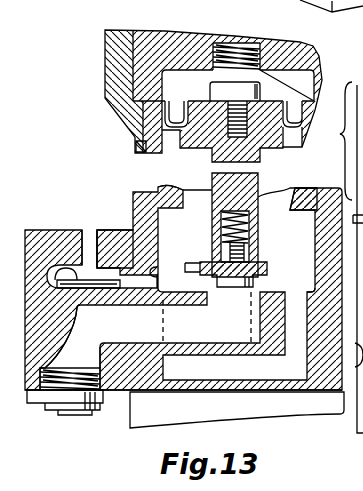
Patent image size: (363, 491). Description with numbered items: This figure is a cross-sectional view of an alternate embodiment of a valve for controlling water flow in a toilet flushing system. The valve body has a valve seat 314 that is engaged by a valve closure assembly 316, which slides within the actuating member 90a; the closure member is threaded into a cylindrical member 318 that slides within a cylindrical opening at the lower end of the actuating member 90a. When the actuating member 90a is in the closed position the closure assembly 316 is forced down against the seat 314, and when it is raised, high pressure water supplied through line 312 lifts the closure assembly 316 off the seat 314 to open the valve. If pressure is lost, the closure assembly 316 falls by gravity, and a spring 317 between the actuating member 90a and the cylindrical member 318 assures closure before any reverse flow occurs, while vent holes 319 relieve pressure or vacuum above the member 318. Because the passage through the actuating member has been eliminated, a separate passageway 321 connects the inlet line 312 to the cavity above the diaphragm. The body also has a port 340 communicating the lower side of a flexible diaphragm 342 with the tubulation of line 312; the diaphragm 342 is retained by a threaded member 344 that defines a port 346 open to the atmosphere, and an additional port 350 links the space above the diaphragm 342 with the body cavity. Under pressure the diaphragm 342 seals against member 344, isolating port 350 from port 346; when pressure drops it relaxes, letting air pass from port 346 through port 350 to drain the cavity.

The actuating member 90a is at (254, 203).
The spring 317 is at (222, 229).
The cylindrical member 318 is at (246, 247).
The valve closure assembly 316 is at (197, 262).
The vent holes 319 is at (186, 193).
The valve seat 314 is at (270, 290).
The additional port 350 is at (131, 292).
The flexible diaphragm 342 is at (70, 270).
The port 346 is at (88, 238).
The member 344 is at (121, 240).
The port 340 is at (75, 323).
The separate passageway 321 is at (137, 145).
The line 312 is at (75, 414).